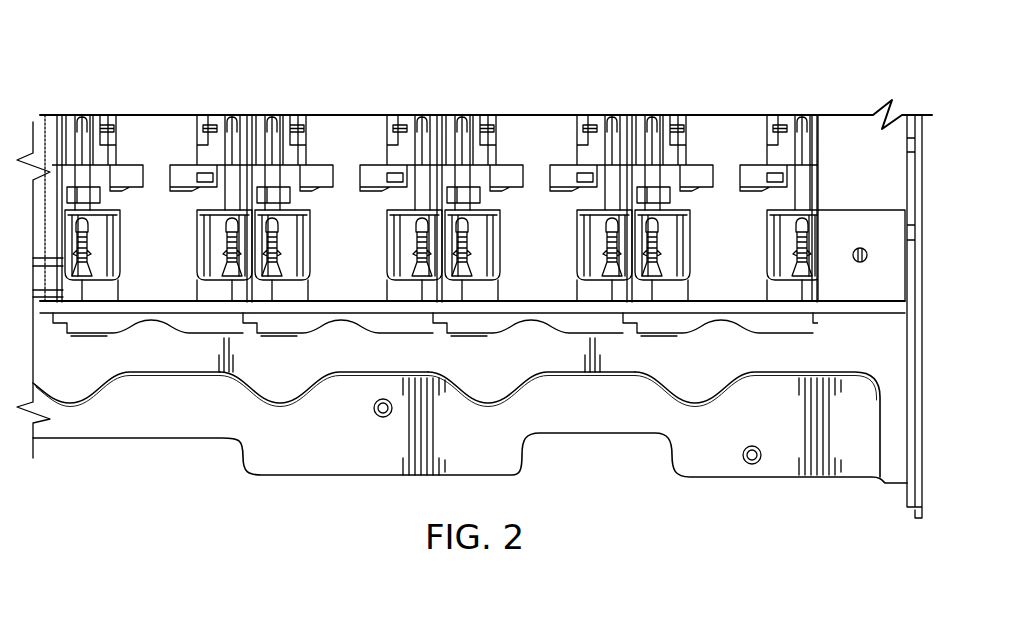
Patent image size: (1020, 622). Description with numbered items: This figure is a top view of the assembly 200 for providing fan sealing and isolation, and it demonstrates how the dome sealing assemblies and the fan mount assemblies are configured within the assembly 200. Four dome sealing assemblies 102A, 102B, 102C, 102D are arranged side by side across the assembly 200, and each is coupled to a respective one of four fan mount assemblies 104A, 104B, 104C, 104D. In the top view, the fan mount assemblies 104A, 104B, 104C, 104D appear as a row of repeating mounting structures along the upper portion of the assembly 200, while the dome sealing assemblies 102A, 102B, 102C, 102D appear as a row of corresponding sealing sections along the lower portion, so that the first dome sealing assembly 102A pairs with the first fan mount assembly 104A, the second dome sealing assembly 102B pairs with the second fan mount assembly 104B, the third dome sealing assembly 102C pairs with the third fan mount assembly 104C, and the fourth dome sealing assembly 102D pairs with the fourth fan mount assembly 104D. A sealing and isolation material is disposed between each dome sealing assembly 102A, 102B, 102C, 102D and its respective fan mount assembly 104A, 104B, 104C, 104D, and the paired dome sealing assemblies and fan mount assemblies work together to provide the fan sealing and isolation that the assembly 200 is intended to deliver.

The connector assembly 200 is at (230, 66).
The dome sealing assembly 102A is at (173, 323).
The dome sealing assembly 102B is at (333, 325).
The dome sealing assembly 102C is at (520, 322).
The dome sealing assembly 102D is at (718, 322).
The fan mount assembly 104A is at (160, 167).
The fan mount assembly 104B is at (347, 167).
The fan mount assembly 104C is at (535, 167).
The fan mount assembly 104D is at (722, 167).